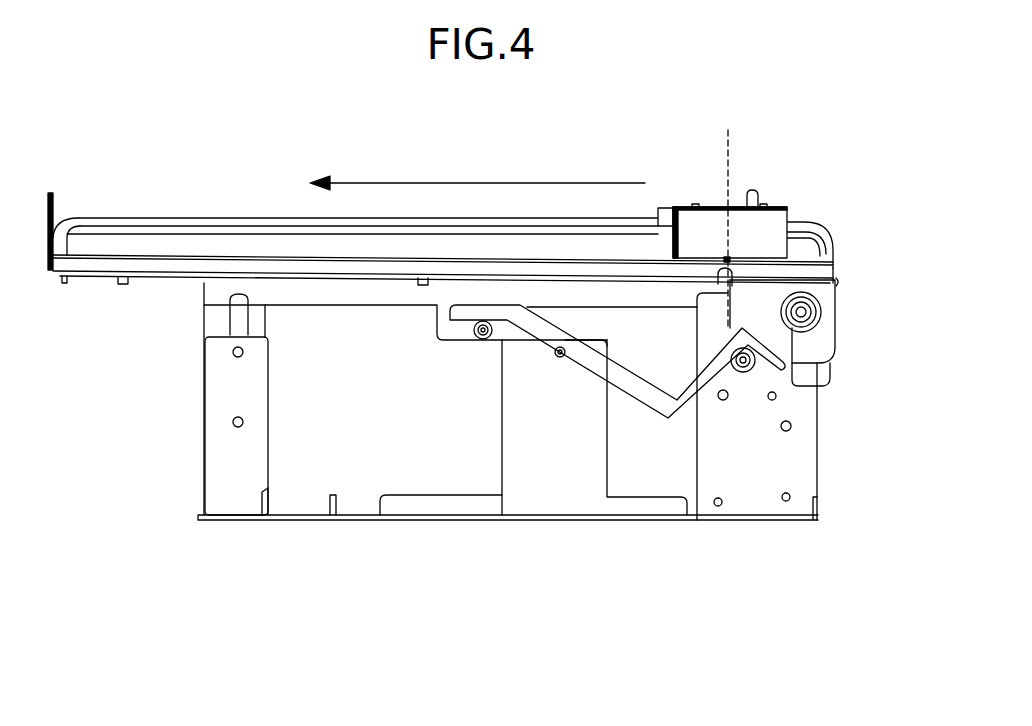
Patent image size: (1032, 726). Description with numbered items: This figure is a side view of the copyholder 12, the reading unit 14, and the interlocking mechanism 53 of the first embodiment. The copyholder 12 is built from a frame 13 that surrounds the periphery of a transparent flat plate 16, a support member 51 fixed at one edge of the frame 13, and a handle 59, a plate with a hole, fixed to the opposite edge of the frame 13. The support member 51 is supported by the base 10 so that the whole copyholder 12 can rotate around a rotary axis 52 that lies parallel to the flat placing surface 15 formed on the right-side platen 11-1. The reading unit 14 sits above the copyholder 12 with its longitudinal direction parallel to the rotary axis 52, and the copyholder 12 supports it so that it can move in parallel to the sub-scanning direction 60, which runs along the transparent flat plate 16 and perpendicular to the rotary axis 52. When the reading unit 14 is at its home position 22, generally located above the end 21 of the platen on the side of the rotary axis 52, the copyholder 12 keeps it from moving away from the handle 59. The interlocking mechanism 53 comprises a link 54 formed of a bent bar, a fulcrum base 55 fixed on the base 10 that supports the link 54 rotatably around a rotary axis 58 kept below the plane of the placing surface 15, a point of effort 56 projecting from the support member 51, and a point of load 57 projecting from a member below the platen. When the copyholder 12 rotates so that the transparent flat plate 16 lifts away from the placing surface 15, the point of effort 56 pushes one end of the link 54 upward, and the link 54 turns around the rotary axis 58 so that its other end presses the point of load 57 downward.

The base 10 is at (413, 521).
The right-side platen 11-1 is at (317, 315).
The copyholder 12 is at (118, 220).
The frame 13 is at (178, 265).
The reading unit 14 is at (712, 207).
The placing surface 15 is at (372, 270).
The transparent flat plate 16 is at (152, 285).
The end of the platen 21 is at (724, 274).
The home position 22 is at (729, 258).
The support member 51 is at (838, 318).
The rotary axis 52 is at (802, 291).
The interlocking mechanism 53 is at (533, 528).
The link 54 is at (637, 403).
The fulcrum base 55 is at (484, 487).
The point of effort 56 is at (743, 373).
The point of load 57 is at (483, 341).
The rotary axis 58 is at (560, 358).
The handle 59 is at (53, 207).
The sub-scanning direction 60 is at (462, 183).